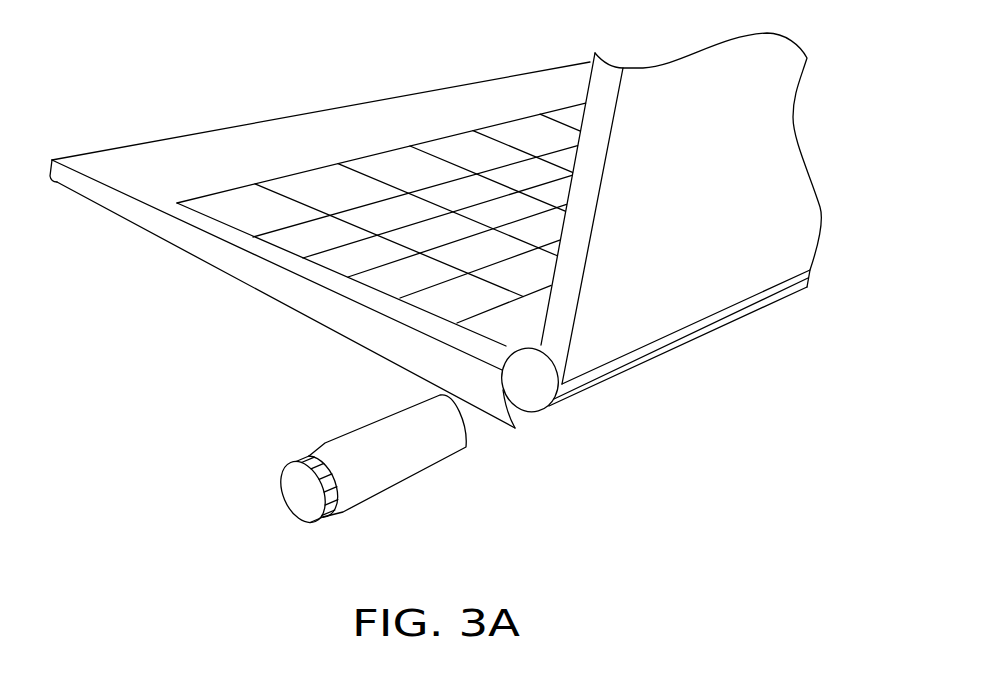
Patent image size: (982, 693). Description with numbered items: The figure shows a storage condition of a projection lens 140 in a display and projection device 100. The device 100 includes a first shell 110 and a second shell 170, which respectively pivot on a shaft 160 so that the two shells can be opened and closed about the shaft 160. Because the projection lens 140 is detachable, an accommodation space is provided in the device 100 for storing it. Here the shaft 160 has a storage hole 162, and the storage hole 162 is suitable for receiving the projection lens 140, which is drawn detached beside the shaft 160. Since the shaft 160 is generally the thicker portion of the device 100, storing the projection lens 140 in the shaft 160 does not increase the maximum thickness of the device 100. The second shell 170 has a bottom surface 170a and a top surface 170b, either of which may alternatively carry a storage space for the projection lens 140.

The display and projection device 100 is at (806, 466).
The first shell 110 is at (688, 93).
The projection lens 140 is at (367, 483).
The shaft 160 is at (523, 412).
The storage hole 162 is at (543, 393).
The second shell 170 is at (172, 170).
The bottom surface 170a is at (198, 270).
The top surface 170b is at (260, 150).